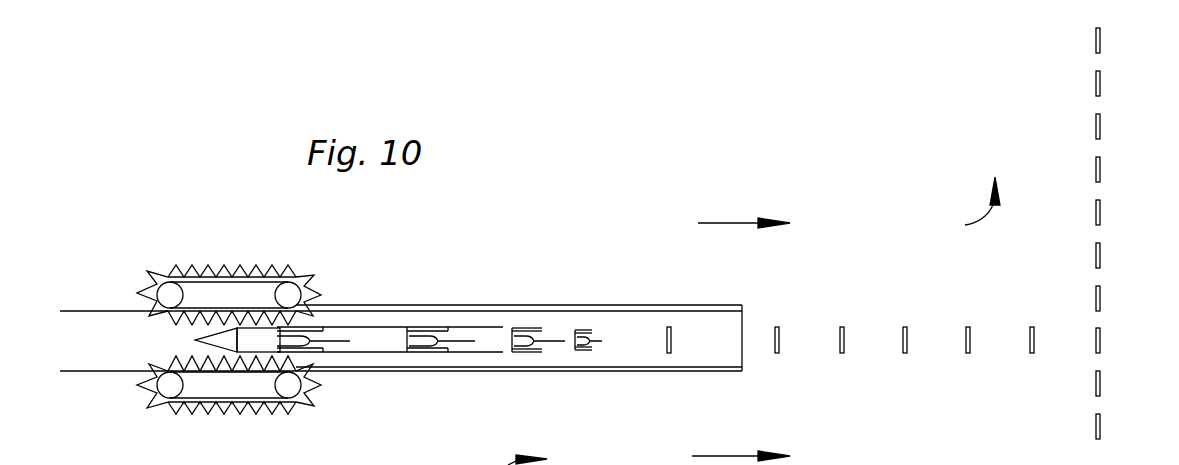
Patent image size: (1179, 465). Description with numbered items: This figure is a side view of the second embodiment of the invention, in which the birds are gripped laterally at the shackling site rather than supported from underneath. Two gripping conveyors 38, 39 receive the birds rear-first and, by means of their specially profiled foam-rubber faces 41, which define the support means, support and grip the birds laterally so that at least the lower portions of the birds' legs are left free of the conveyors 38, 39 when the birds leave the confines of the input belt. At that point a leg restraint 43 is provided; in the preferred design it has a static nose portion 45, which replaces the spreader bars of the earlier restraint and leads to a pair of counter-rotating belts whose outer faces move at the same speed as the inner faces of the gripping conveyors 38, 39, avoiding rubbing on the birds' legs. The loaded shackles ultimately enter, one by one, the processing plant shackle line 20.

The processing plant shackle line 20 is at (1100, 165).
The gripping conveyor 38 is at (130, 253).
The gripping conveyor 39 is at (112, 425).
The foam-rubber faces 41 is at (192, 266).
The leg restraint 43 is at (258, 330).
The static nose portion 45 is at (213, 343).